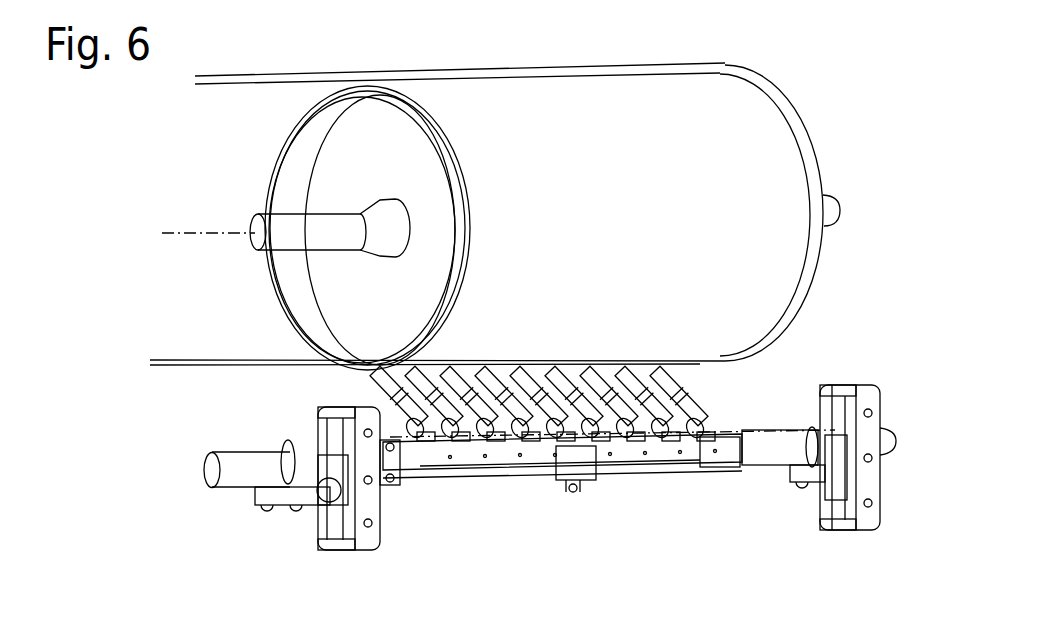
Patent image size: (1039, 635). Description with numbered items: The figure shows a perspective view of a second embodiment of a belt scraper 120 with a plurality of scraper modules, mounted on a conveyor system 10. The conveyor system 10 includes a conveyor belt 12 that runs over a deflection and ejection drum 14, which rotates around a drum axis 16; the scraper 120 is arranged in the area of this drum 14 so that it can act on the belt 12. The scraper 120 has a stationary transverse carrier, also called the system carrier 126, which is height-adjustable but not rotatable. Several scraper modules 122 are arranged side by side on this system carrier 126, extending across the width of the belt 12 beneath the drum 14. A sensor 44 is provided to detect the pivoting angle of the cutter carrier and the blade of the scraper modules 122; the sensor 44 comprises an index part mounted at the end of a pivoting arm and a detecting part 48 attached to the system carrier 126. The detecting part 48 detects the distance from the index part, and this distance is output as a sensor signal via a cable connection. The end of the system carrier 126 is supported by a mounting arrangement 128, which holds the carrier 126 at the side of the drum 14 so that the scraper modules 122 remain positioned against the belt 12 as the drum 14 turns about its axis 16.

The conveyor system 10 is at (185, 160).
The conveyor belt 12 is at (372, 76).
The deflection and ejection drum 14 is at (812, 167).
The drum axis 16 is at (166, 233).
The sensor 44 is at (543, 505).
The detecting part 48 is at (577, 472).
The scraper 120 is at (838, 333).
The scraper modules 122 is at (682, 398).
The transverse carrier (system carrier) 126 is at (655, 455).
The mounting bracket 128 is at (322, 432).